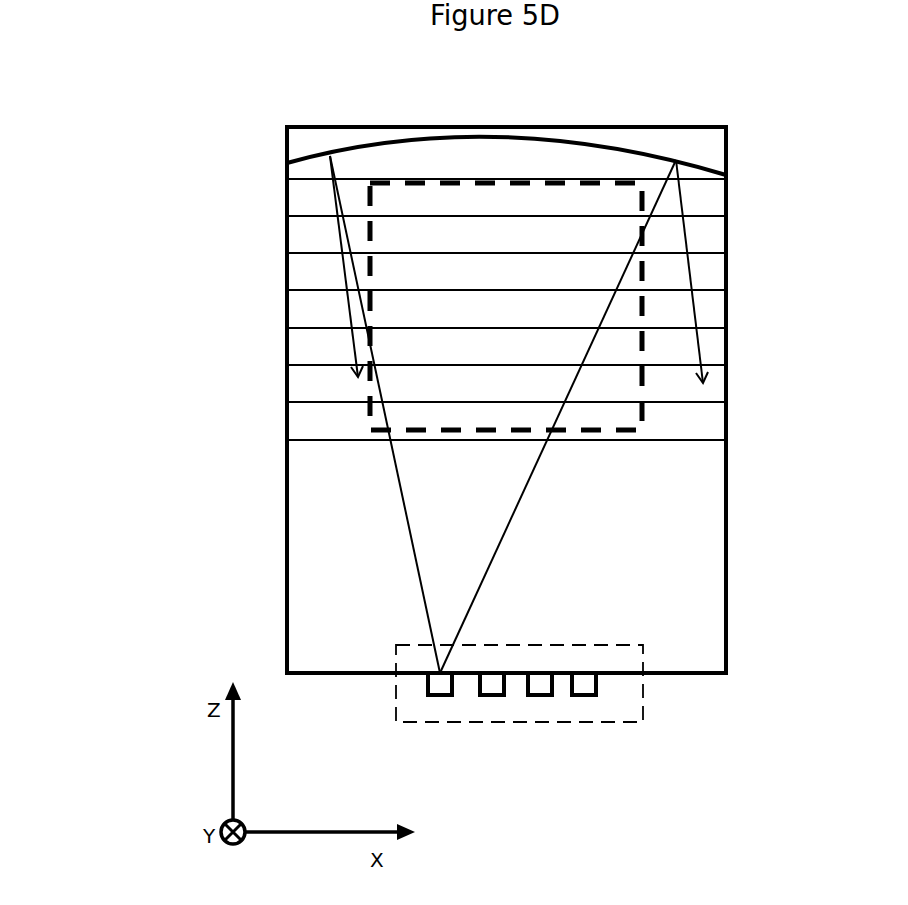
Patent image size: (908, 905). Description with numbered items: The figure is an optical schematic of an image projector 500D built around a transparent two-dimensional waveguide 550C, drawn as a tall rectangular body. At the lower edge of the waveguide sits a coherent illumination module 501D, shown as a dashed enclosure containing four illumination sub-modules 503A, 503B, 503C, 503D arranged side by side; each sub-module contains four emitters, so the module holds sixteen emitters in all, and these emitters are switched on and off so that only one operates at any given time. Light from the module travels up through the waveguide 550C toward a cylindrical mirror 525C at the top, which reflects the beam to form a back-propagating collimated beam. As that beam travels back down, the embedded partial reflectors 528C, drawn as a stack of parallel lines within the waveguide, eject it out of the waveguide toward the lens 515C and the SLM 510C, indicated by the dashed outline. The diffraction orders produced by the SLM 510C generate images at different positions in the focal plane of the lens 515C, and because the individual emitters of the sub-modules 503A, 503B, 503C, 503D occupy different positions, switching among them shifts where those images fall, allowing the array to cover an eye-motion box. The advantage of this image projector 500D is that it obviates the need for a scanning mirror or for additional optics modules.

The image projector 500D is at (406, 80).
The two-dimensional waveguide 550C is at (665, 123).
The cylindrical mirror 525C is at (700, 163).
The embedded partial reflectors 528C is at (707, 177).
The SLM 510C is at (368, 207).
The lens 515C is at (506, 306).
The coherent illumination module 501D is at (642, 652).
The illumination sub-module 503A is at (440, 696).
The illumination sub-module 503B is at (493, 696).
The illumination sub-module 503C is at (542, 696).
The illumination sub-module 503D is at (585, 696).